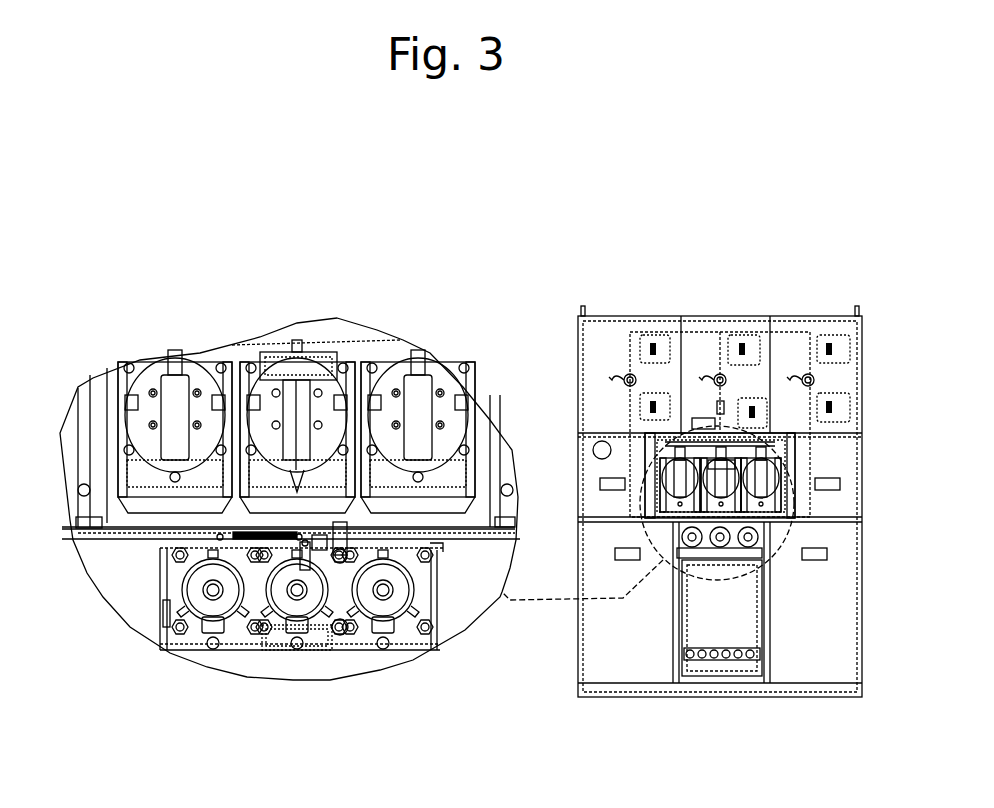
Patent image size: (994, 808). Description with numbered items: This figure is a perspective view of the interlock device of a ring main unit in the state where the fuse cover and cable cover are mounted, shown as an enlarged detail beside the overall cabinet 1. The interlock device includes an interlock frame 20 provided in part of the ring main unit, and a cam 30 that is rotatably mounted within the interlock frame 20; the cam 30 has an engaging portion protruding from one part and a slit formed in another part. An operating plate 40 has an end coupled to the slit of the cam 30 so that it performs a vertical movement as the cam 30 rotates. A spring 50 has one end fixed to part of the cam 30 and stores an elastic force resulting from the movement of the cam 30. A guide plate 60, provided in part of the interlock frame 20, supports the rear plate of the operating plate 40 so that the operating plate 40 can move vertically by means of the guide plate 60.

The switchgear cabinet 1 is at (862, 392).
The interlock frame 20 is at (160, 552).
The cam 30 is at (313, 537).
The operating plate 40 is at (343, 630).
The spring 50 is at (238, 534).
The guide plate 60 is at (348, 556).